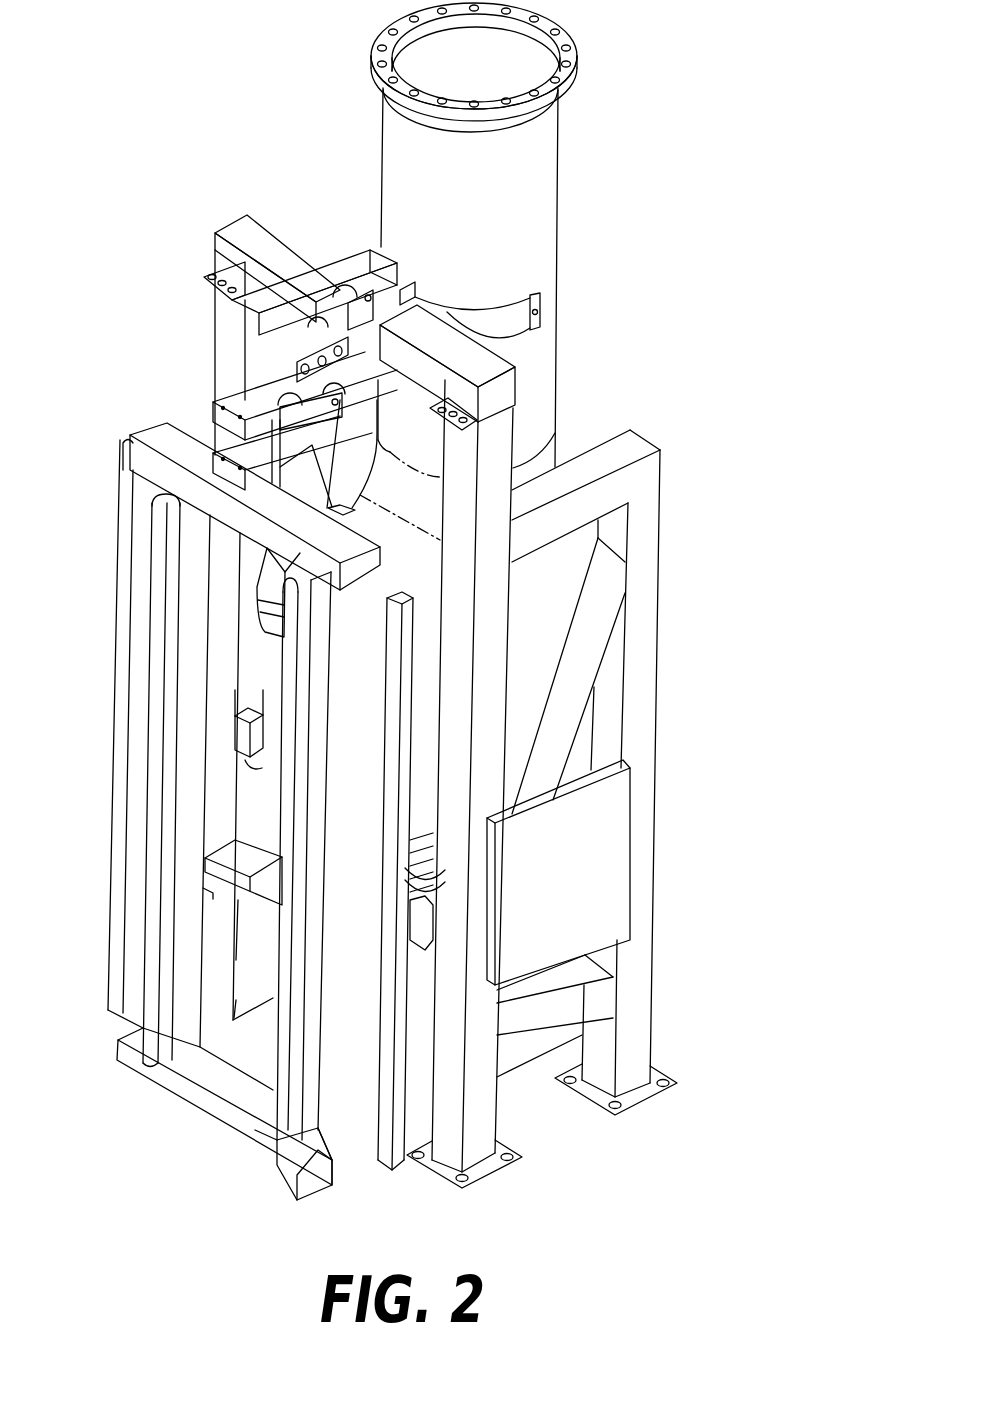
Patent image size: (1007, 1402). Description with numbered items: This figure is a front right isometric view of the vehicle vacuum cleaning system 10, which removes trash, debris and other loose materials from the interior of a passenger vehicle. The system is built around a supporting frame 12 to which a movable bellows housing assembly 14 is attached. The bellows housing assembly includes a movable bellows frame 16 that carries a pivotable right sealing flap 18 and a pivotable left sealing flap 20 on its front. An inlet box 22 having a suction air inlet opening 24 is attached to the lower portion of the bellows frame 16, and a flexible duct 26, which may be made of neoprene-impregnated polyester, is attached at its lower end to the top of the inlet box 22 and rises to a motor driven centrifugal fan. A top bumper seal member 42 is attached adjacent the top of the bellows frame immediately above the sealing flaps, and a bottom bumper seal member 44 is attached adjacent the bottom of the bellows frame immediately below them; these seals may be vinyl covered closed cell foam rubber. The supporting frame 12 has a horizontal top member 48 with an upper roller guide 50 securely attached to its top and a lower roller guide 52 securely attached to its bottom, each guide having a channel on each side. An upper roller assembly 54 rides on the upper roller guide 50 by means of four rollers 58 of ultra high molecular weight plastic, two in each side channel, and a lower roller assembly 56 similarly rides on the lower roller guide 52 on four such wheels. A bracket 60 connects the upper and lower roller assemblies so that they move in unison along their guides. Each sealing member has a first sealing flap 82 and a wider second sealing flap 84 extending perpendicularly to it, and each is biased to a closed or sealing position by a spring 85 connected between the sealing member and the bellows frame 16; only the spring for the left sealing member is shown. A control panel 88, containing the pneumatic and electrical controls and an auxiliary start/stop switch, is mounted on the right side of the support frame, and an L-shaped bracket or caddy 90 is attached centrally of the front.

The vehicle vacuum cleaning system 10 is at (753, 346).
The supporting frame 12 is at (660, 563).
The bellows housing assembly 14 is at (380, 1172).
The bellows frame 16 is at (237, 653).
The right sealing flap 18 is at (318, 1092).
The left sealing flap 20 is at (142, 783).
The inlet box 22 is at (272, 993).
The suction air inlet opening 24 is at (264, 1052).
The flexible duct 26 is at (558, 170).
The top bumper seal member 42 is at (125, 450).
The bottom bumper seal member 44 is at (125, 1056).
The horizontal top member 48 is at (235, 232).
The upper roller guide 50 is at (367, 257).
The lower roller guide 52 is at (307, 422).
The upper roller assembly 54 is at (340, 268).
The lower roller assembly 56 is at (280, 386).
The rollers 58 is at (398, 290).
The bracket 60 is at (292, 352).
The first sealing flap 82 is at (313, 1067).
The second sealing flap 84 is at (352, 1093).
The spring 85 is at (212, 893).
The control panel 88 is at (633, 850).
The L-shaped bracket or caddy 90 is at (252, 758).